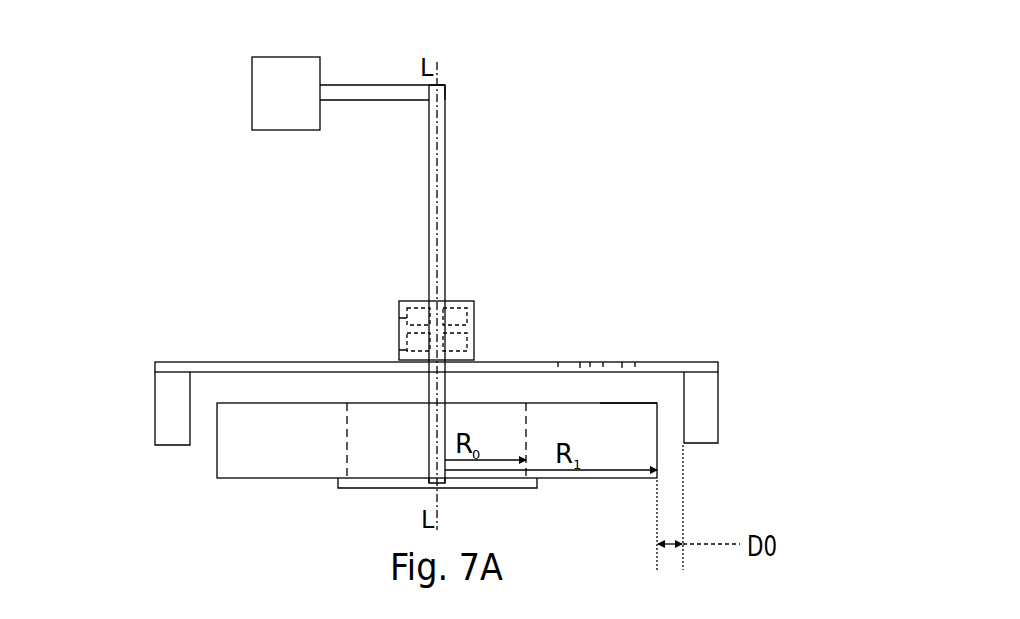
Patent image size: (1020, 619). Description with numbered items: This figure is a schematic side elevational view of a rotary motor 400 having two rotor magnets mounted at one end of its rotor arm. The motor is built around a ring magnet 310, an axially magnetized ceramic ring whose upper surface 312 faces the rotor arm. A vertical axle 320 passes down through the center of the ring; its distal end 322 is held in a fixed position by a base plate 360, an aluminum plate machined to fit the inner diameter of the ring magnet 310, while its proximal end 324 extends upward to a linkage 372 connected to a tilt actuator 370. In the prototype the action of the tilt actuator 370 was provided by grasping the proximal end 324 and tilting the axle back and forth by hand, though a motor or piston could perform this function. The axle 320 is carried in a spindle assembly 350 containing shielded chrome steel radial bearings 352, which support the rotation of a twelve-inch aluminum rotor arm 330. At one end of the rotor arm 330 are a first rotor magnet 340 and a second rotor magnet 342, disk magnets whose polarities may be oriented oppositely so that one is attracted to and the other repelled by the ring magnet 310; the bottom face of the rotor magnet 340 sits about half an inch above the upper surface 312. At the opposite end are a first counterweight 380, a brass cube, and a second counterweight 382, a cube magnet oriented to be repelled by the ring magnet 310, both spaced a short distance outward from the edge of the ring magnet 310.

The ring magnet 310 is at (660, 462).
The upper surface of the ring magnet 312 is at (648, 402).
The axle 320 is at (446, 196).
The distal end of the axle 322 is at (445, 483).
The proximal end of the axle 324 is at (445, 87).
The rotor arm 330 is at (650, 362).
The first rotor magnet 340 is at (622, 362).
The second rotor magnet 342 is at (580, 362).
The spindle assembly 350 is at (474, 311).
The radial bearings 352 is at (399, 350).
The base plate 360 is at (537, 488).
The tilt actuator 370 is at (312, 108).
The linkage 372 is at (370, 85).
The first counterweight 380 is at (720, 403).
The second counterweight 382 is at (157, 395).
The rotary motor 400 is at (560, 126).